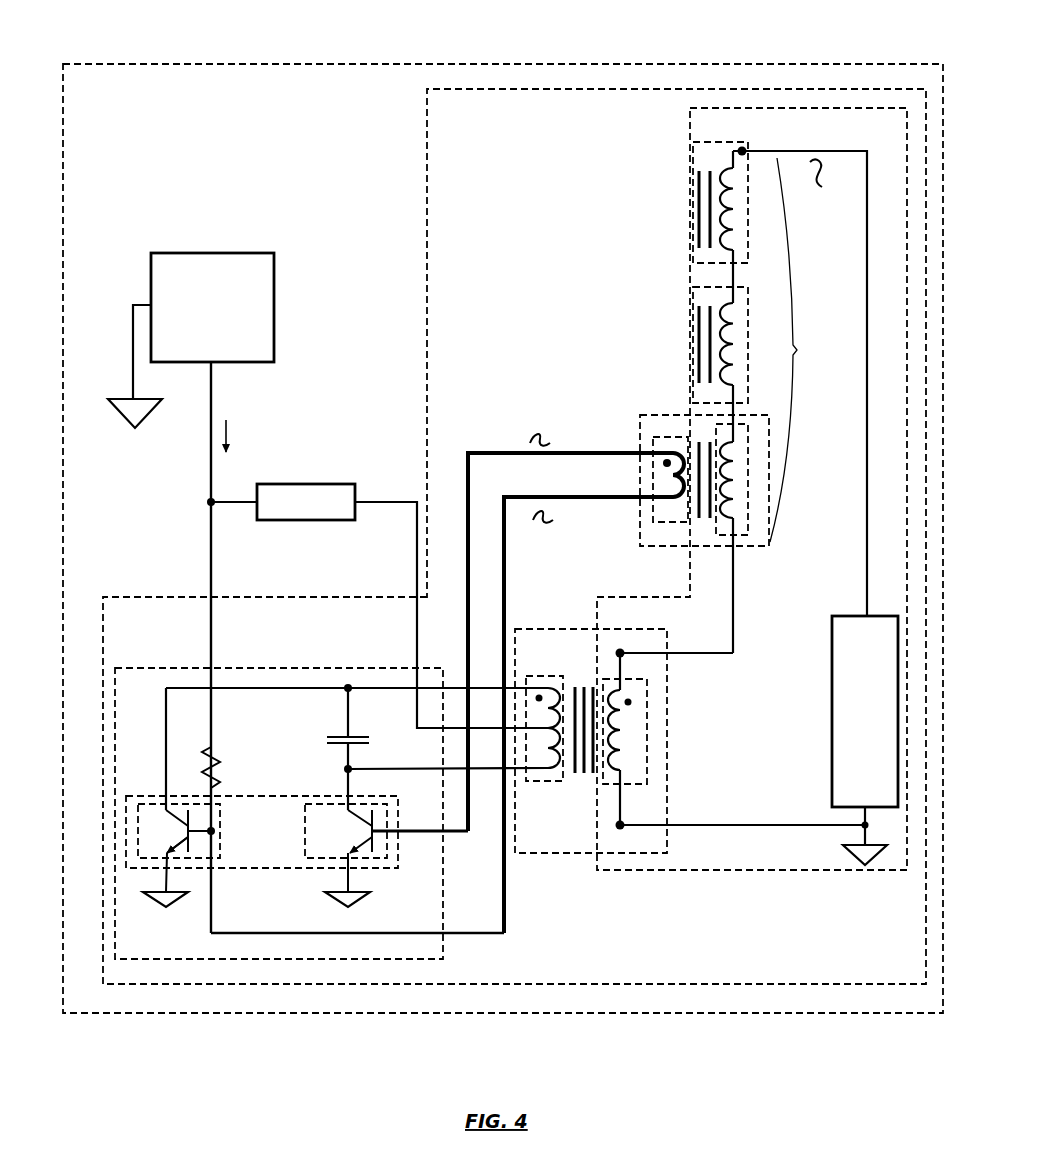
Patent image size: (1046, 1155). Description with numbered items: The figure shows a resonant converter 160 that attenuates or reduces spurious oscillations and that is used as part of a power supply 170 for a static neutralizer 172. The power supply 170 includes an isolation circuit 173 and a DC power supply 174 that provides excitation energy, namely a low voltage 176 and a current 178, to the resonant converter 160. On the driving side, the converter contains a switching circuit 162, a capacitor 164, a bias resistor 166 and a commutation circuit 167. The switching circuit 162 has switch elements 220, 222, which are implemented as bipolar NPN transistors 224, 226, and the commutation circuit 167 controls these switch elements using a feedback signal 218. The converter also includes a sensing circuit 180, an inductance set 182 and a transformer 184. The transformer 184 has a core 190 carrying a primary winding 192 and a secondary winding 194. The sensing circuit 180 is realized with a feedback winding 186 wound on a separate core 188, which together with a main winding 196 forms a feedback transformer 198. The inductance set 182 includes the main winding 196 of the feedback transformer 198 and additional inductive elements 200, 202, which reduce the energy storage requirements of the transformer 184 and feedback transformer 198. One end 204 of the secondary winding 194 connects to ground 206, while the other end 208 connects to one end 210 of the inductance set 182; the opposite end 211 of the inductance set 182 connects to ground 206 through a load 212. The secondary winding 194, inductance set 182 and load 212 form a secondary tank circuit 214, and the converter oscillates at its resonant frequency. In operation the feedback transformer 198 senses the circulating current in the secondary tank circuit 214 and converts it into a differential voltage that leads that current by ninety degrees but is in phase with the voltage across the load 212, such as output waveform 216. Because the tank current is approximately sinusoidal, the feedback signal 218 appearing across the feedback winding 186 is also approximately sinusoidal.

The resonant converter 160 is at (130, 597).
The switching circuit 162 is at (264, 870).
The capacitor 164 is at (330, 737).
The bias resistor 166 is at (212, 748).
The commutation circuit 167 is at (142, 668).
The power supply 170 is at (207, 64).
The static neutralizer 172 is at (712, 54).
The isolation circuit 173 is at (379, 606).
The DC power supply 174 is at (203, 593).
The low voltage 176 is at (176, 458).
The current 178 is at (250, 434).
The sensing circuit 180 is at (655, 516).
The inductance set 182 is at (806, 350).
The transformer 184 is at (667, 730).
The feedback winding 186 is at (658, 443).
The core 188 is at (700, 423).
The core 190 is at (578, 668).
The primary winding 192 is at (538, 785).
The secondary winding 194 is at (647, 760).
The main winding 196 is at (740, 535).
The feedback transformer 198 is at (652, 446).
The inductive element 200 is at (748, 306).
The inductive element 202 is at (748, 258).
The end 204 is at (620, 825).
The ground 206 is at (130, 428).
The end 208 is at (620, 653).
The end 210 is at (733, 620).
The end 211 is at (745, 149).
The load 212 is at (865, 730).
The secondary tank circuit 214 is at (690, 112).
The output waveform 216 is at (818, 196).
The feedback signal 218 is at (535, 456).
The switch element 220 is at (242, 836).
The switch element 222 is at (305, 840).
The bipolar NPN transistor 224 is at (157, 822).
The bipolar NPN transistor 226 is at (330, 817).